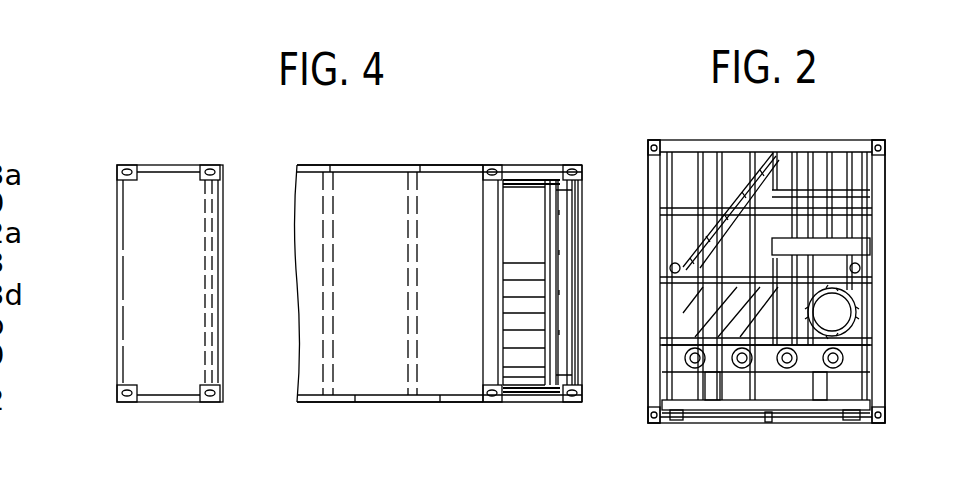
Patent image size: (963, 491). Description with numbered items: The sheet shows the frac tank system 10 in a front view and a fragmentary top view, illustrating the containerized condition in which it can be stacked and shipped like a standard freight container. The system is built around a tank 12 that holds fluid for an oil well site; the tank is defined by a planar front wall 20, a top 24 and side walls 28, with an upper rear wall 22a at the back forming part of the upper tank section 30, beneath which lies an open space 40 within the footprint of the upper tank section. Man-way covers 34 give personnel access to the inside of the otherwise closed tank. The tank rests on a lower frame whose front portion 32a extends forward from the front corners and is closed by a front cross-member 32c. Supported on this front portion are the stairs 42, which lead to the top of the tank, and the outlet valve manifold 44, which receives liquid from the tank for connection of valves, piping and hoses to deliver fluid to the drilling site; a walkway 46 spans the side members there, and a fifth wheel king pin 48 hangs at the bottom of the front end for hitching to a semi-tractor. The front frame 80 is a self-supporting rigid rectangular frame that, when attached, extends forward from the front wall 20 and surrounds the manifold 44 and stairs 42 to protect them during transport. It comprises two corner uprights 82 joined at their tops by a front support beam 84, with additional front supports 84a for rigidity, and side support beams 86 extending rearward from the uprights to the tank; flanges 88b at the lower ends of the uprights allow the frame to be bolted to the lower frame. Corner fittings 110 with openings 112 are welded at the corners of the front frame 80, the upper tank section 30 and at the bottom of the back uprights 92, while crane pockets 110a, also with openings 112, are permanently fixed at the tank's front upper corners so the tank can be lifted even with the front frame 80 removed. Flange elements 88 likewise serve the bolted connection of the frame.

In FIG. 4, the frac tank system 10 is at (360, 158).
In FIG. 2, the frac tank system 10 is at (803, 130).
In FIG. 4, the tank 12 is at (370, 402).
In FIG. 2, the tank 12 is at (683, 158).
In FIG. 4, the front wall 20 is at (500, 262).
In FIG. 4, the upper rear wall 22a is at (117, 256).
In FIG. 4, the top 24 is at (389, 283).
In FIG. 2, the top 24 is at (737, 145).
In FIG. 4, the side walls 28 is at (444, 165).
In FIG. 2, the side walls 28 is at (647, 288).
In FIG. 4, the upper tank section 30 is at (205, 320).
In FIG. 4, the front portion of the lower frame 32a is at (510, 402).
In FIG. 2, the front cross-member 32c is at (747, 414).
In FIG. 2, the removable covers 34 is at (832, 312).
In FIG. 4, the open space 40 is at (240, 207).
In FIG. 4, the stairs 42 is at (515, 208).
In FIG. 2, the stairs 42 is at (880, 242).
In FIG. 4, the outlet valve manifold 44 is at (567, 280).
In FIG. 2, the outlet valve manifold 44 is at (873, 364).
In FIG. 2, the walkway 46 is at (884, 399).
In FIG. 2, the fifth wheel king pin 48 is at (768, 424).
In FIG. 2, the front frame 80 is at (636, 210).
In FIG. 2, the uprights 82 is at (648, 322).
In FIG. 4, the front support beam 84 is at (580, 370).
In FIG. 2, the front support beam 84 is at (777, 147).
In FIG. 2, the additional front supports 84a is at (873, 213).
In FIG. 4, the side support beams 86 is at (510, 182).
In FIG. 2, the hole 88 is at (765, 268).
In FIG. 2, the flanges 88b is at (681, 421).
In FIG. 4, the back uprights 92 is at (0, 357).
In FIG. 4, the corner fittings 110 is at (128, 165).
In FIG. 2, the corner fittings 110 is at (875, 140).
In FIG. 4, the crane pockets 110a is at (205, 165).
In FIG. 4, the openings 112 is at (203, 180).
In FIG. 2, the openings 112 is at (882, 148).